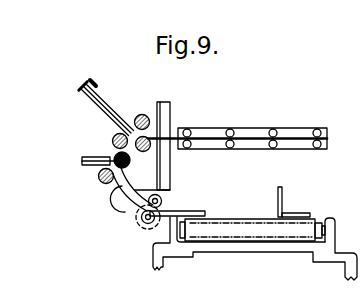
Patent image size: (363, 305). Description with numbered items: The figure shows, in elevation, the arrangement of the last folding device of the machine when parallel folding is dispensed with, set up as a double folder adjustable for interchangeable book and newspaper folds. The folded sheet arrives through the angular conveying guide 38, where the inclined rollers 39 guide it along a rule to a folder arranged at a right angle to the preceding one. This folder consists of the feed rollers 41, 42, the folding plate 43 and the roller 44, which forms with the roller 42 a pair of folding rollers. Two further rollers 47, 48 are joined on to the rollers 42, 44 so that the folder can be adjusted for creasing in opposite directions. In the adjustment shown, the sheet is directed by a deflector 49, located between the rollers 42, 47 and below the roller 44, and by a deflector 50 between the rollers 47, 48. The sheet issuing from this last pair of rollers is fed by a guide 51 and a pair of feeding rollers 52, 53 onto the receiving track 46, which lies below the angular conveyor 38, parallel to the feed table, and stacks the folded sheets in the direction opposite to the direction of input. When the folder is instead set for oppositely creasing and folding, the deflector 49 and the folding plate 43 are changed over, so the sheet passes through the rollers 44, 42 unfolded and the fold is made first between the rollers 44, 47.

The angular conveying guide 38 is at (212, 134).
The inclined roller 39 is at (314, 129).
The feed roller 41 is at (139, 117).
The feed roller 42 is at (167, 150).
The folding plate 43 is at (108, 109).
The roller 44 is at (114, 120).
The receiving track 46 is at (254, 226).
The further roller 47 is at (130, 166).
The further roller 48 is at (105, 185).
The deflector 49 is at (130, 157).
The deflector 50 is at (96, 157).
The guide 51 is at (128, 206).
The feeding roller 52 is at (146, 228).
The feeding roller 53 is at (163, 202).